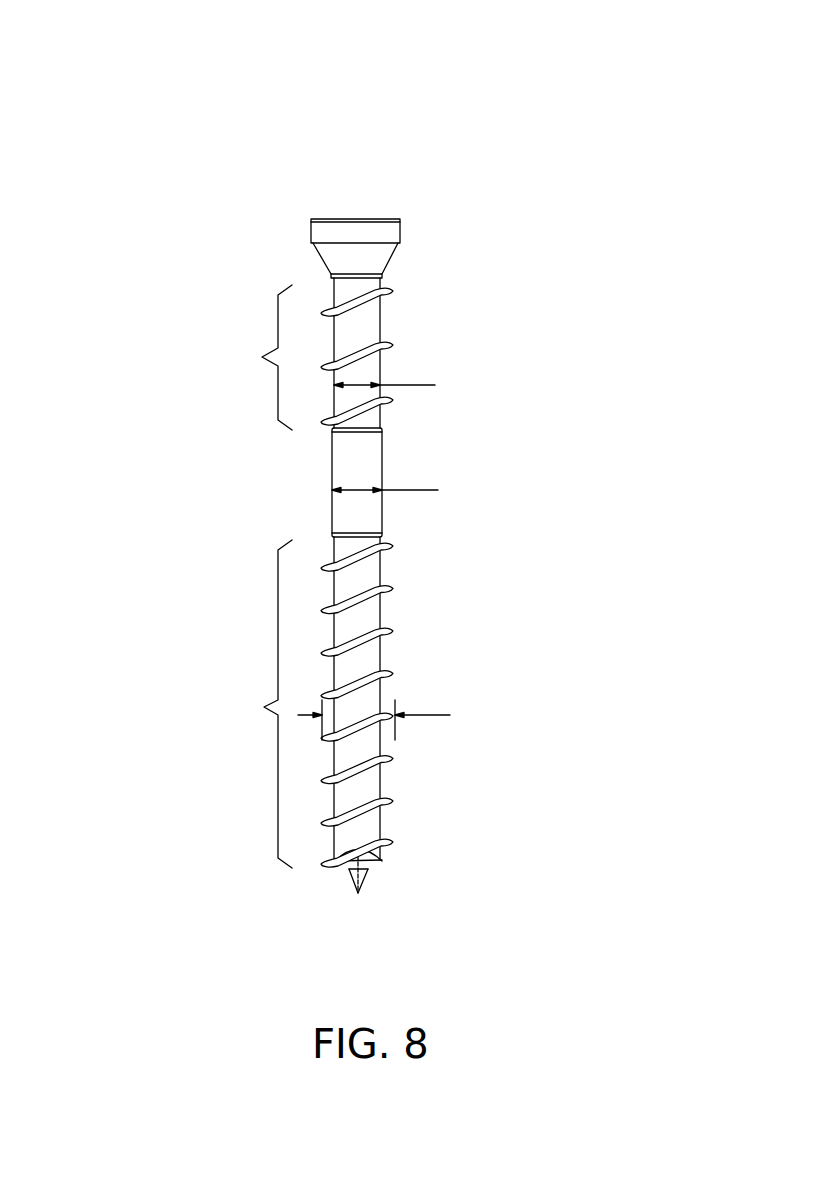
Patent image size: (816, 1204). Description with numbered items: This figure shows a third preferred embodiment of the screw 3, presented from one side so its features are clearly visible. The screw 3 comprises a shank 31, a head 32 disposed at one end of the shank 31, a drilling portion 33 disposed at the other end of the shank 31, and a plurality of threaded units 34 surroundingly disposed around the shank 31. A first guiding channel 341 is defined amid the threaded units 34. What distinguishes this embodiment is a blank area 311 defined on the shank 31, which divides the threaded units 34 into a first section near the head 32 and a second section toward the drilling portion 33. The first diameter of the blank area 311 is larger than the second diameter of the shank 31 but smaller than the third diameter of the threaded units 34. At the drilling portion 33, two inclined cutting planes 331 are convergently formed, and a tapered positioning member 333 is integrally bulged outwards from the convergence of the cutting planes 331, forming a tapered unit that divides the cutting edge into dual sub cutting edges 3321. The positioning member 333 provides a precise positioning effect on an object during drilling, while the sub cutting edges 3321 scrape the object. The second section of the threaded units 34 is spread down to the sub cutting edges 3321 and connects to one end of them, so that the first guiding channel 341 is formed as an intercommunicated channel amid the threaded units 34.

The screw 3 is at (112, 112).
The head 32 is at (400, 231).
The blank area 311 is at (382, 458).
The shank 31 is at (381, 568).
The drilling portion 33 is at (393, 858).
The sub cutting edge 3321 is at (375, 868).
The tapered positioning member 333 is at (358, 893).
The threaded units 34 is at (386, 337).
The first guiding channel 341 is at (388, 783).
The inclined cutting plane 331 is at (345, 862).